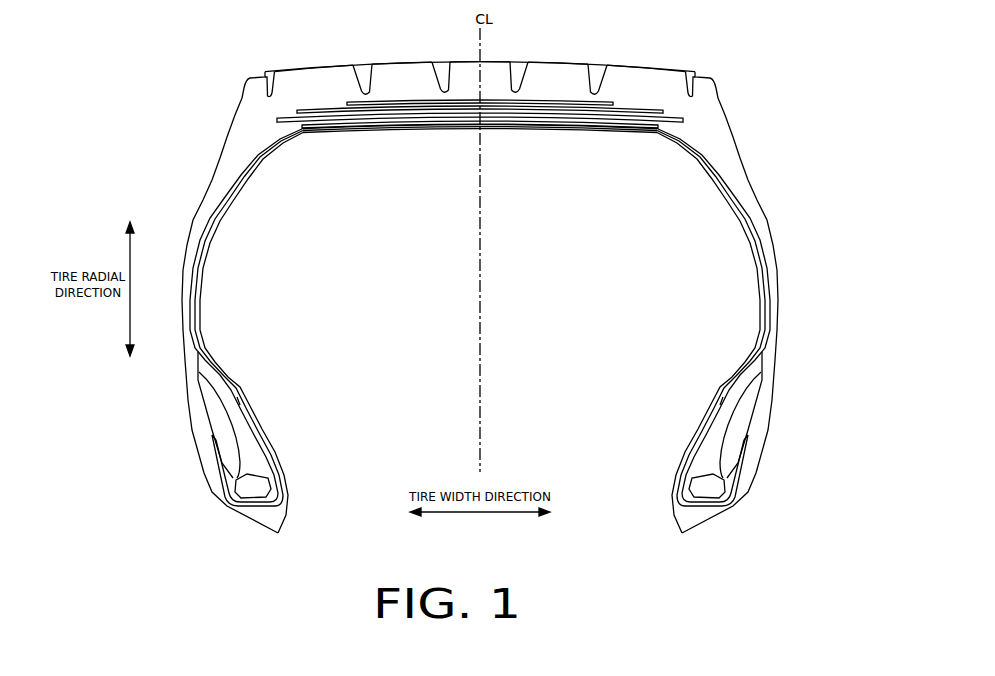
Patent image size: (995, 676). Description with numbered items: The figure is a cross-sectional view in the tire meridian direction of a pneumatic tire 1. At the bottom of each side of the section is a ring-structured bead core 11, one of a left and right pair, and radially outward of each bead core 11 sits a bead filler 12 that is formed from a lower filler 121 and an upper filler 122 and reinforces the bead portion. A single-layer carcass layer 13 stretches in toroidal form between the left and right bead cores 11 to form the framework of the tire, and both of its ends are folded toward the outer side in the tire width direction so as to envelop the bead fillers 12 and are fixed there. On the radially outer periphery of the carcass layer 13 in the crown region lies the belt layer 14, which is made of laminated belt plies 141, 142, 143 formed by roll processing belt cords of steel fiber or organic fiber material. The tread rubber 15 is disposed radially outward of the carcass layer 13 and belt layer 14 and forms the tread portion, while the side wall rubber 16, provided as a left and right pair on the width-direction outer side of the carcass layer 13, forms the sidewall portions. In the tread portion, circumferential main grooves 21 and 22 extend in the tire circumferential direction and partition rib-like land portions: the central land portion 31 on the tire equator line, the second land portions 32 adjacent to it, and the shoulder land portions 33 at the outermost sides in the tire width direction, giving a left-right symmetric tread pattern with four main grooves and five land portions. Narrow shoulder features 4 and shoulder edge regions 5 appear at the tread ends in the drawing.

The pneumatic tire 1 is at (755, 57).
The shoulder narrow groove 4 is at (271, 71).
The shoulder portion 5 is at (250, 76).
The bead core 11 is at (249, 487).
The bead filler 12 is at (142, 413).
The lower filler 121 is at (247, 448).
The upper filler 122 is at (222, 422).
The carcass layer 13 is at (710, 168).
The belt layer 14 is at (590, 173).
The belt ply 141 is at (654, 130).
The belt ply 142 is at (630, 124).
The belt ply 143 is at (603, 118).
The tread rubber 15 is at (566, 62).
The side wall rubber 16 is at (224, 149).
The circumferential main groove 21 is at (440, 62).
The circumferential main groove 22 is at (365, 64).
The central land portion 31 is at (490, 62).
The second land portion 32 is at (415, 64).
The shoulder land portion 33 is at (310, 70).